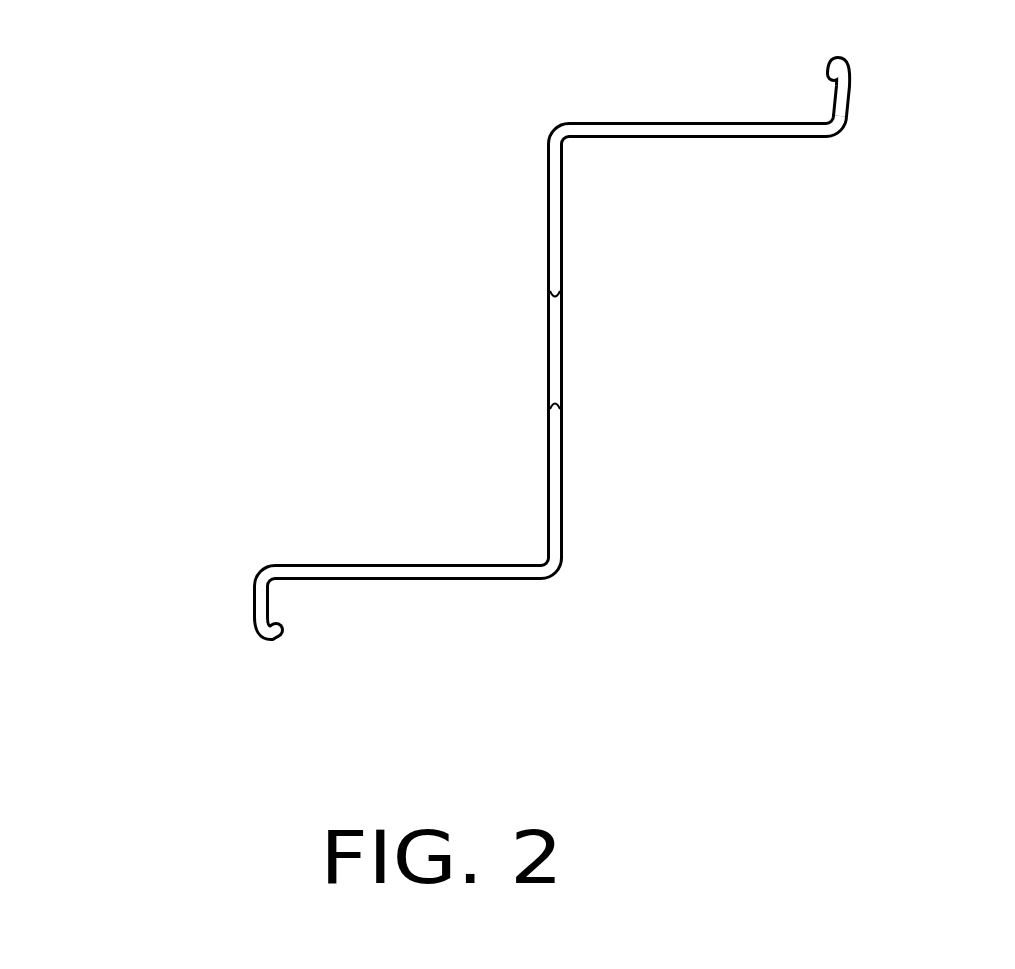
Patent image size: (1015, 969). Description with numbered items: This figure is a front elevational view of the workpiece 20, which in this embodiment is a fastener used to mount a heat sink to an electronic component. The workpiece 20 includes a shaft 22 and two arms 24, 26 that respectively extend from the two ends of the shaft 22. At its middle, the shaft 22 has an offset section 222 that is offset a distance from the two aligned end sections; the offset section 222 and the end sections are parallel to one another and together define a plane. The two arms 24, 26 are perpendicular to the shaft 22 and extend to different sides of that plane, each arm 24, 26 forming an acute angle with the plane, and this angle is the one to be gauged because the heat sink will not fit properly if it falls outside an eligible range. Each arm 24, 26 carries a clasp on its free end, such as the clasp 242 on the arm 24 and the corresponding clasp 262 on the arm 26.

The workpiece 20 is at (546, 343).
The shaft 22 is at (554, 226).
The offset section 222 is at (553, 369).
The arm 24 is at (408, 577).
The clasp 242 is at (263, 603).
The arm 26 is at (683, 133).
The upper hook end 262 is at (848, 88).